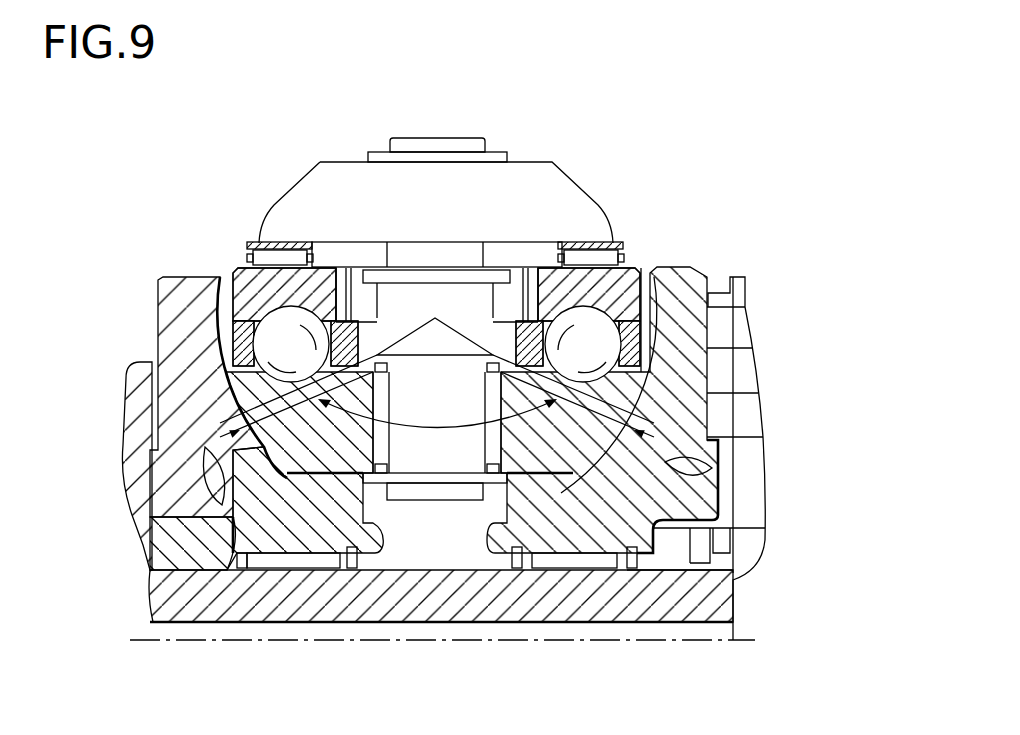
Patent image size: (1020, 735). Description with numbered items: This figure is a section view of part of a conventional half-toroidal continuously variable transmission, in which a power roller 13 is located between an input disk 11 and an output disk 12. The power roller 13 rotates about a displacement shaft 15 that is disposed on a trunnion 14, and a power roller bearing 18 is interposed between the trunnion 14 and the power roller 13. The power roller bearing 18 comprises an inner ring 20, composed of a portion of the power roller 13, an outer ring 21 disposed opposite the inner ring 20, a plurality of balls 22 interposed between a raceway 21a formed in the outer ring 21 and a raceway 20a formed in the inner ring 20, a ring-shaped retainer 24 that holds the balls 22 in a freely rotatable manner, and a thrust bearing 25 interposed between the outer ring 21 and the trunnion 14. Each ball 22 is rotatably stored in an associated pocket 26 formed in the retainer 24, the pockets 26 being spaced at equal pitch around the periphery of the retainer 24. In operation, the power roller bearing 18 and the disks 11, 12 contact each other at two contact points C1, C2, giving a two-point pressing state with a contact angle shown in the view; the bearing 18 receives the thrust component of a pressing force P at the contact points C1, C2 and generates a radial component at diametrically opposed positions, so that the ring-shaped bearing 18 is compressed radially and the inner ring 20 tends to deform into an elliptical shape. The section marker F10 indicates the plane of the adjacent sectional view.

The input disk 11 is at (697, 327).
The output disk 12 is at (175, 311).
The power roller 13 is at (346, 455).
The trunnion 14 is at (563, 203).
The displacement shaft 15 is at (457, 457).
The power roller bearing 18 is at (645, 248).
The inner ring 20 is at (650, 397).
The raceway 20a is at (240, 392).
The outer ring 21 is at (625, 305).
The raceway 21a is at (280, 318).
The balls 22 is at (263, 358).
The retainer 24 is at (295, 300).
The thrust bearing 25 is at (282, 258).
The pockets 26 is at (237, 340).
The pressing force P is at (203, 460).
The contact point C1 is at (720, 510).
The contact point C2 is at (193, 473).
The section line F10 is at (460, 98).